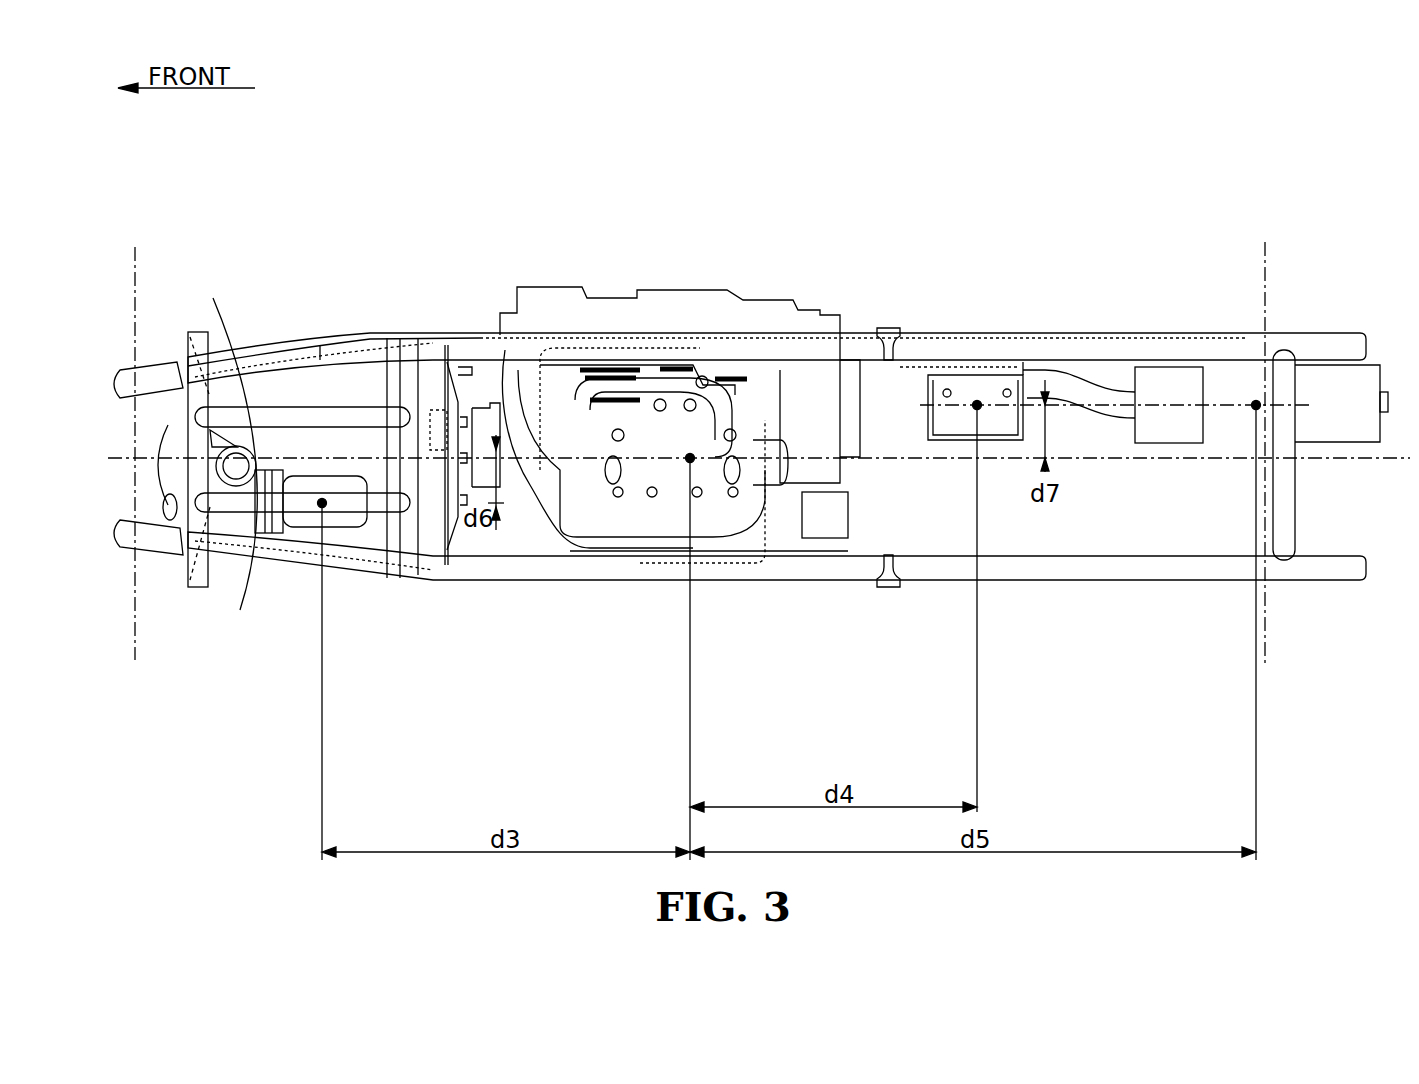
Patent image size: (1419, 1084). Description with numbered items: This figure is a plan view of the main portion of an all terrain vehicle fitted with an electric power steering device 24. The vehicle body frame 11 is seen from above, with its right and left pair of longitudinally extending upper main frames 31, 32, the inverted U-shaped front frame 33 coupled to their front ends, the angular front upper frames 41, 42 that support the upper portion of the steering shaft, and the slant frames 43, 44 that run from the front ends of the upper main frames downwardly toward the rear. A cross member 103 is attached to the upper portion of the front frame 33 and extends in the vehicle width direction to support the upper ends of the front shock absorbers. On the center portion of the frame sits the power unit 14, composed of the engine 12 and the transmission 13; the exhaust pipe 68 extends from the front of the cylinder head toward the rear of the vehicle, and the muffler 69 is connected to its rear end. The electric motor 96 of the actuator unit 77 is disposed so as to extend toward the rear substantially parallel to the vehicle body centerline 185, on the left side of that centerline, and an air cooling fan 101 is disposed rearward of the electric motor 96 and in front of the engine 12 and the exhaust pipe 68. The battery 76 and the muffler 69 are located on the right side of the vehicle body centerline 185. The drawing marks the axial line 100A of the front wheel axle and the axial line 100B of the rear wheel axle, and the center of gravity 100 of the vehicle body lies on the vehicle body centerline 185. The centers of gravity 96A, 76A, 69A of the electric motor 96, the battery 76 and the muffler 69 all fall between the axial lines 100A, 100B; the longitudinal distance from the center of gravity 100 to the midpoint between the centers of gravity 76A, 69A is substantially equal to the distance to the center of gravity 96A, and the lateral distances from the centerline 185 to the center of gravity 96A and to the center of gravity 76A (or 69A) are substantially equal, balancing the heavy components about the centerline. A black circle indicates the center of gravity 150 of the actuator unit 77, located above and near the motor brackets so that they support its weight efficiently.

The vehicle body frame 11 is at (283, 345).
The engine 12 is at (668, 495).
The transmission 13 is at (724, 540).
The power unit 14 is at (686, 285).
The electric power steering device 24 is at (157, 372).
The upper main frame 31 is at (482, 572).
The upper main frame 32 is at (484, 350).
The front frame 33 is at (153, 556).
The front upper frame 41 is at (383, 560).
The front upper frame 42 is at (365, 348).
The slant frame 43 is at (353, 560).
The slant frame 44 is at (318, 348).
The exhaust pipe 68 is at (520, 440).
The muffler 69 is at (1190, 382).
The center of gravity of the muffler 69A is at (1253, 400).
The battery 76 is at (970, 392).
The center of gravity of the battery 76A is at (977, 405).
The actuator unit 77 is at (237, 560).
The electric motor 96 is at (345, 513).
The center of gravity of the electric motor 96A is at (320, 508).
The center of gravity of the vehicle body 100 is at (690, 460).
The axial line of the front wheel axle 100A is at (138, 648).
The axial line of the rear wheel axle 100B is at (1267, 648).
The air cooling fan 101 is at (436, 380).
The cross member 103 is at (200, 588).
The center of gravity of the actuator unit 150 is at (237, 378).
The vehicle body centerline 185 is at (1407, 455).